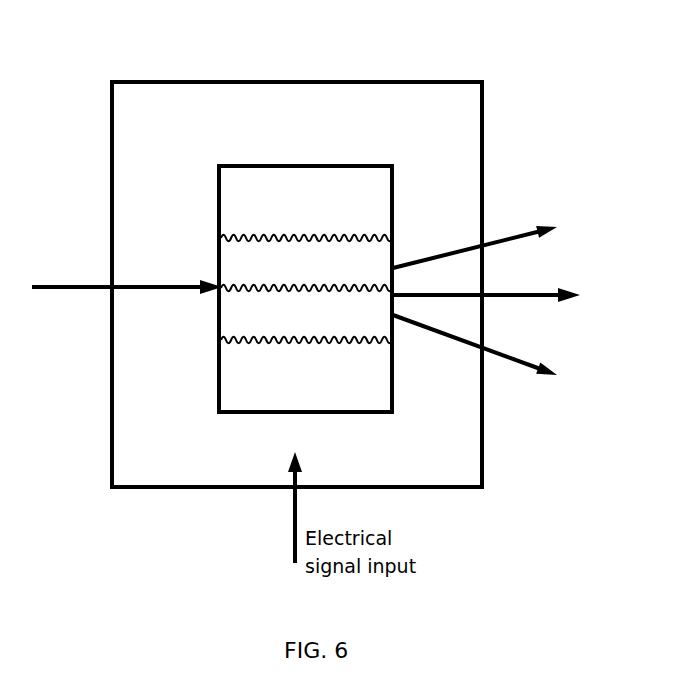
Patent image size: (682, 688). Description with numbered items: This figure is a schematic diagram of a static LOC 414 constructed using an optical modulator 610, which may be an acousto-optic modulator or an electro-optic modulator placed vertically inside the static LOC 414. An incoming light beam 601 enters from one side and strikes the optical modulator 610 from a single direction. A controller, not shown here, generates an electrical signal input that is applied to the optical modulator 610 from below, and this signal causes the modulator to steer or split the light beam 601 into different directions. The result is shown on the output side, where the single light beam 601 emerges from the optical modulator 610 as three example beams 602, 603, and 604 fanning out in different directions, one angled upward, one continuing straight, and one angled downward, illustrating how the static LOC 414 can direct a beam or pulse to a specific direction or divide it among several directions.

The static LOC 414 is at (370, 80).
The optical modulator 610 is at (345, 163).
The light beam 601 is at (127, 275).
The reflected beam 602 is at (481, 228).
The reflected beam 603 is at (495, 281).
The reflected beam 604 is at (490, 345).